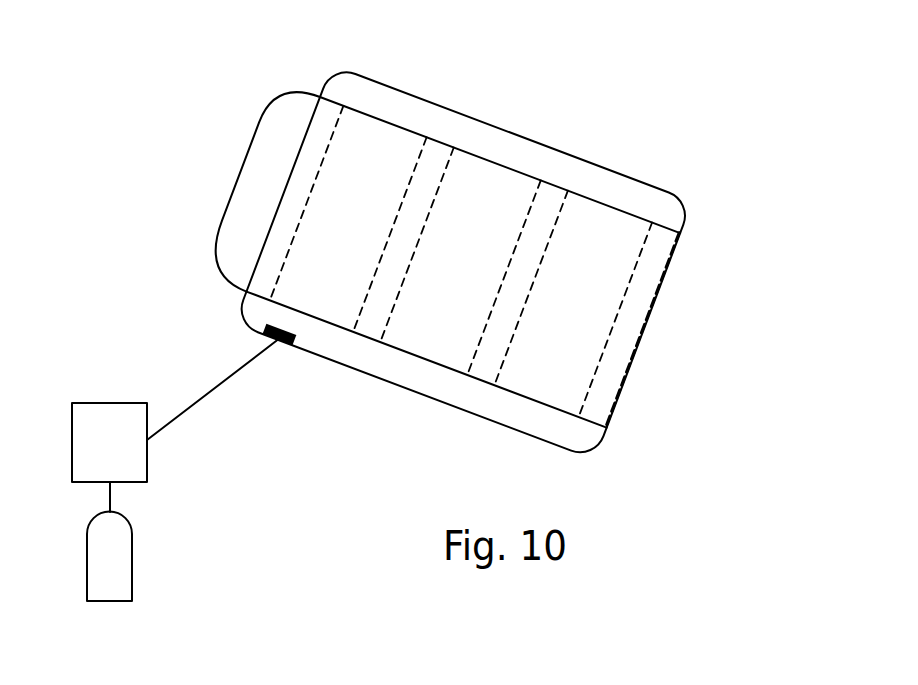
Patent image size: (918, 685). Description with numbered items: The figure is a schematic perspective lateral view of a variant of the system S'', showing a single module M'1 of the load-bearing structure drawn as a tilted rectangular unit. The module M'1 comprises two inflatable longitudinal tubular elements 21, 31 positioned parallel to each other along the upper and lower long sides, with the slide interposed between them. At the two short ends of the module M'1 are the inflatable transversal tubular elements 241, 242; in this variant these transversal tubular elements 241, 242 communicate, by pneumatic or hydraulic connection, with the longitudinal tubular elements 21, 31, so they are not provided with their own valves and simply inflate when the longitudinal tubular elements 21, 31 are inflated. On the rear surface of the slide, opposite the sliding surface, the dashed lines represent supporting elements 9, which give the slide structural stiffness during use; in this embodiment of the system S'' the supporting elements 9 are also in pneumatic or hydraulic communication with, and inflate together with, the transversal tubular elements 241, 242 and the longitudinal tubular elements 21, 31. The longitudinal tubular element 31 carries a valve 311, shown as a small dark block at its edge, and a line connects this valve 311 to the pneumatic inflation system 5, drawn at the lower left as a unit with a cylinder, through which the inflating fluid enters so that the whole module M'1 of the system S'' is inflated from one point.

The pneumatic inflation system 5 is at (83, 368).
The supporting elements 9 is at (415, 256).
The inflatable longitudinal tubular element 21 is at (530, 143).
The inflatable longitudinal tubular element 31 is at (357, 370).
The inflatable transversal tubular element 241 is at (322, 117).
The inflatable transversal tubular element 242 is at (660, 255).
The valve 311 is at (268, 340).
The module M'1 is at (475, 38).
The system S'' is at (749, 128).